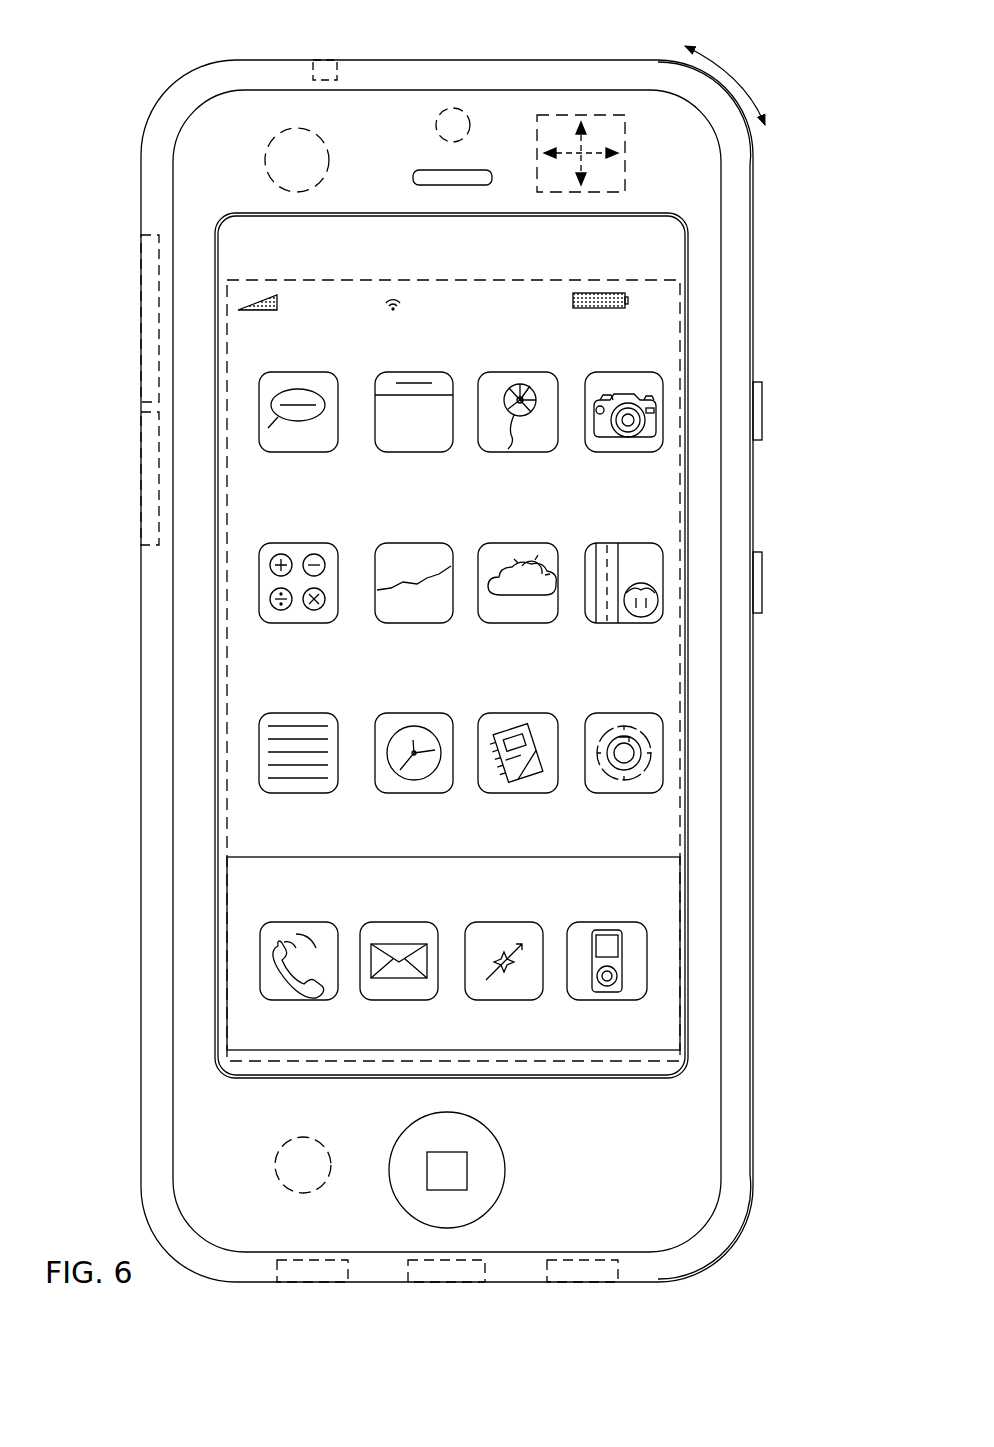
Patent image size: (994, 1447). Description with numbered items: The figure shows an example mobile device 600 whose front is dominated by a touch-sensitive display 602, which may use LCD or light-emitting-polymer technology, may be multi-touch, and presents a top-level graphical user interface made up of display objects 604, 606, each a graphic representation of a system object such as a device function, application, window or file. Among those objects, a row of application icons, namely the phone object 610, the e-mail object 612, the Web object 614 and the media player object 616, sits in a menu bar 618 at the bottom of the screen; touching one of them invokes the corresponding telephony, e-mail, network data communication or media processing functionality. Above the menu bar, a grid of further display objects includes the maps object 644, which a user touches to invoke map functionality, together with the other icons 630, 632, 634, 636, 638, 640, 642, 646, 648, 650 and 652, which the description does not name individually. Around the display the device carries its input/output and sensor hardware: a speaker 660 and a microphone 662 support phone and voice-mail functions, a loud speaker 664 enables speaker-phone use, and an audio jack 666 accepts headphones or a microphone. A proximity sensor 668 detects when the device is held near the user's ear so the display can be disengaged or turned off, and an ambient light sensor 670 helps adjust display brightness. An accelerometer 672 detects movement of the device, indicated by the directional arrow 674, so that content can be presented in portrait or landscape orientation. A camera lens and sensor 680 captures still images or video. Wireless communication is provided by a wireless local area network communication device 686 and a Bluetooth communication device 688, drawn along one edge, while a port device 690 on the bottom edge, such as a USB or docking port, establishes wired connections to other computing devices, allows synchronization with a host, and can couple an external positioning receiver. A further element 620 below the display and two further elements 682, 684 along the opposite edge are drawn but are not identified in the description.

The mobile device 600 is at (757, 236).
The touch-sensitive display 602 is at (280, 283).
The display object 604 is at (325, 1040).
The display object 606 is at (519, 288).
The phone object 610 is at (297, 922).
The e-mail object 612 is at (399, 922).
The Web object 614 is at (504, 922).
The media player object 616 is at (609, 922).
The menu bar 618 is at (576, 1050).
The home button 620 is at (505, 1172).
The text messaging icon 630 is at (302, 372).
The calendar icon 632 is at (419, 372).
The photos icon 634 is at (519, 372).
The camera icon 636 is at (627, 372).
The calculator icon 638 is at (302, 542).
The stocks icon 640 is at (419, 542).
The weather icon 642 is at (519, 542).
The maps object 644 is at (627, 542).
The notes icon 646 is at (302, 712).
The clock icon 648 is at (419, 712).
The address book icon 650 is at (519, 712).
The settings icon 652 is at (627, 712).
The speaker 660 is at (413, 179).
The microphone 662 is at (310, 1281).
The loud speaker 664 is at (580, 1281).
The audio jack 666 is at (325, 64).
The proximity sensor 668 is at (265, 167).
The ambient light sensor 670 is at (285, 1186).
The accelerometer 672 is at (627, 159).
The directional arrow 674 is at (736, 78).
The camera lens and sensor 680 is at (436, 113).
The volume adjustment button 682 is at (763, 412).
The volume adjustment button 684 is at (763, 582).
The 802.11b/g communication device 686 is at (140, 317).
The Bluetooth communication device 688 is at (140, 475).
The port device 690 is at (445, 1281).